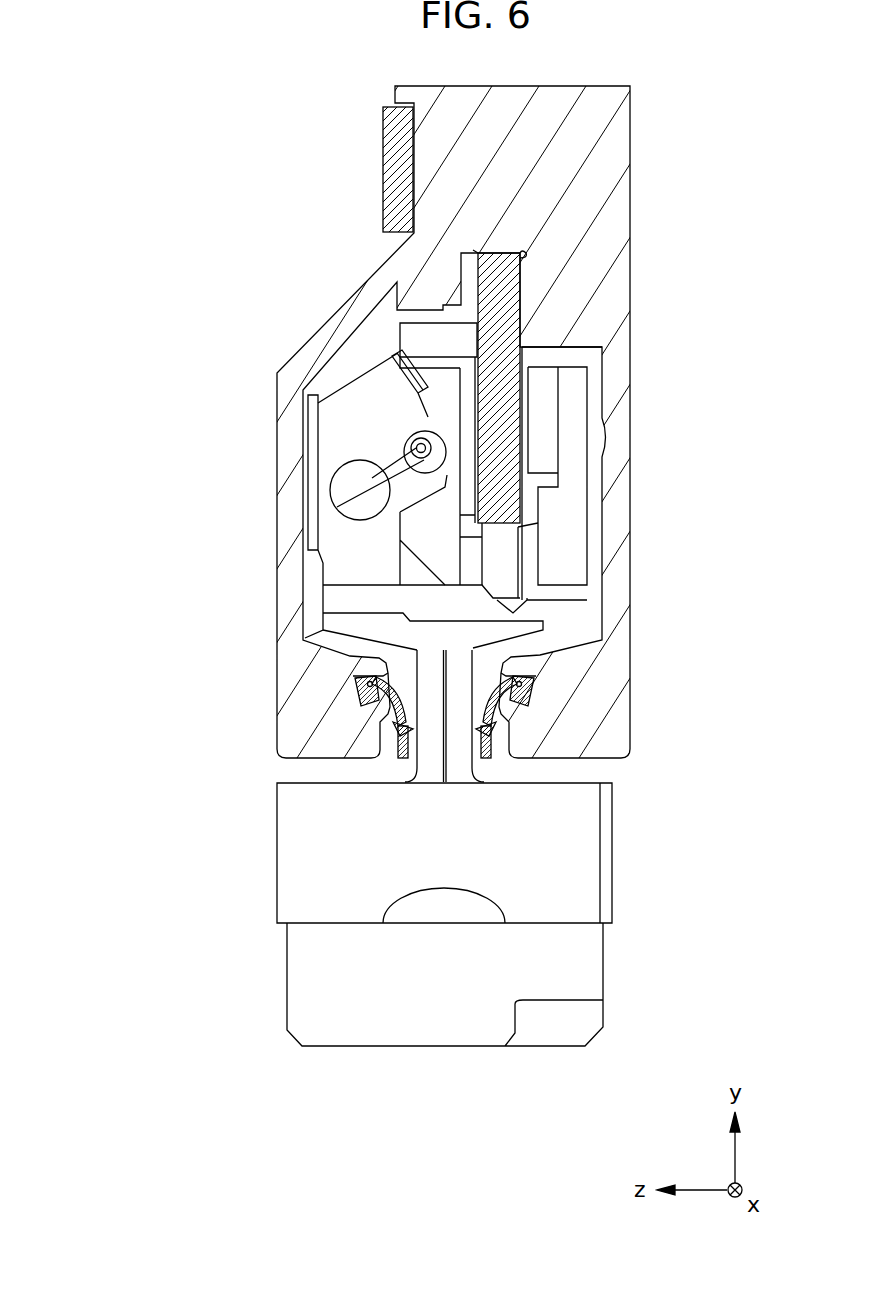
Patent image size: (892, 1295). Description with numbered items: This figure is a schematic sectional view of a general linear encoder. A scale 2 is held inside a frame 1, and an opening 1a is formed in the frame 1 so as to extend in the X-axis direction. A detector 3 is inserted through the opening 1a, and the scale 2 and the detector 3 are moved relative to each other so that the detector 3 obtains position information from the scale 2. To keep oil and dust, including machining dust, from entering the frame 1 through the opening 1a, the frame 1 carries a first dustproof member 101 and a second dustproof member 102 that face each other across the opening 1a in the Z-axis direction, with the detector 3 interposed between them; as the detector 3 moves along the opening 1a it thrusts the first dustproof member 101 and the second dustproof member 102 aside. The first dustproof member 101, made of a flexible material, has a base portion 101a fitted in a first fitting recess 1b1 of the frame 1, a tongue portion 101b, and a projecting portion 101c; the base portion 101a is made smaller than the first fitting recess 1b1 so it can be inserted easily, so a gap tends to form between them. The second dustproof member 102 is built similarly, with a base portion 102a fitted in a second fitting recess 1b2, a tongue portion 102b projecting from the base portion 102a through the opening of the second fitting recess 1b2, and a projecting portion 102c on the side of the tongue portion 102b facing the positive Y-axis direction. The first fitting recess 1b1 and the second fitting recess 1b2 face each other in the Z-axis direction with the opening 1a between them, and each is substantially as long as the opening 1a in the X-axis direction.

The frame 1 is at (630, 188).
The opening 1a is at (412, 772).
The first fitting recess 1b1 is at (352, 673).
The second fitting recess 1b2 is at (537, 675).
The scale 2 is at (497, 340).
The detector 3 is at (317, 1003).
The first dustproof member 101 is at (242, 674).
The base portion 101a is at (360, 706).
The tongue portion 101b is at (385, 724).
The projecting portion 101c is at (395, 743).
The second dustproof member 102 is at (642, 654).
The base portion 102a is at (537, 702).
The tongue portion 102b is at (507, 727).
The projecting portion 102c is at (490, 740).